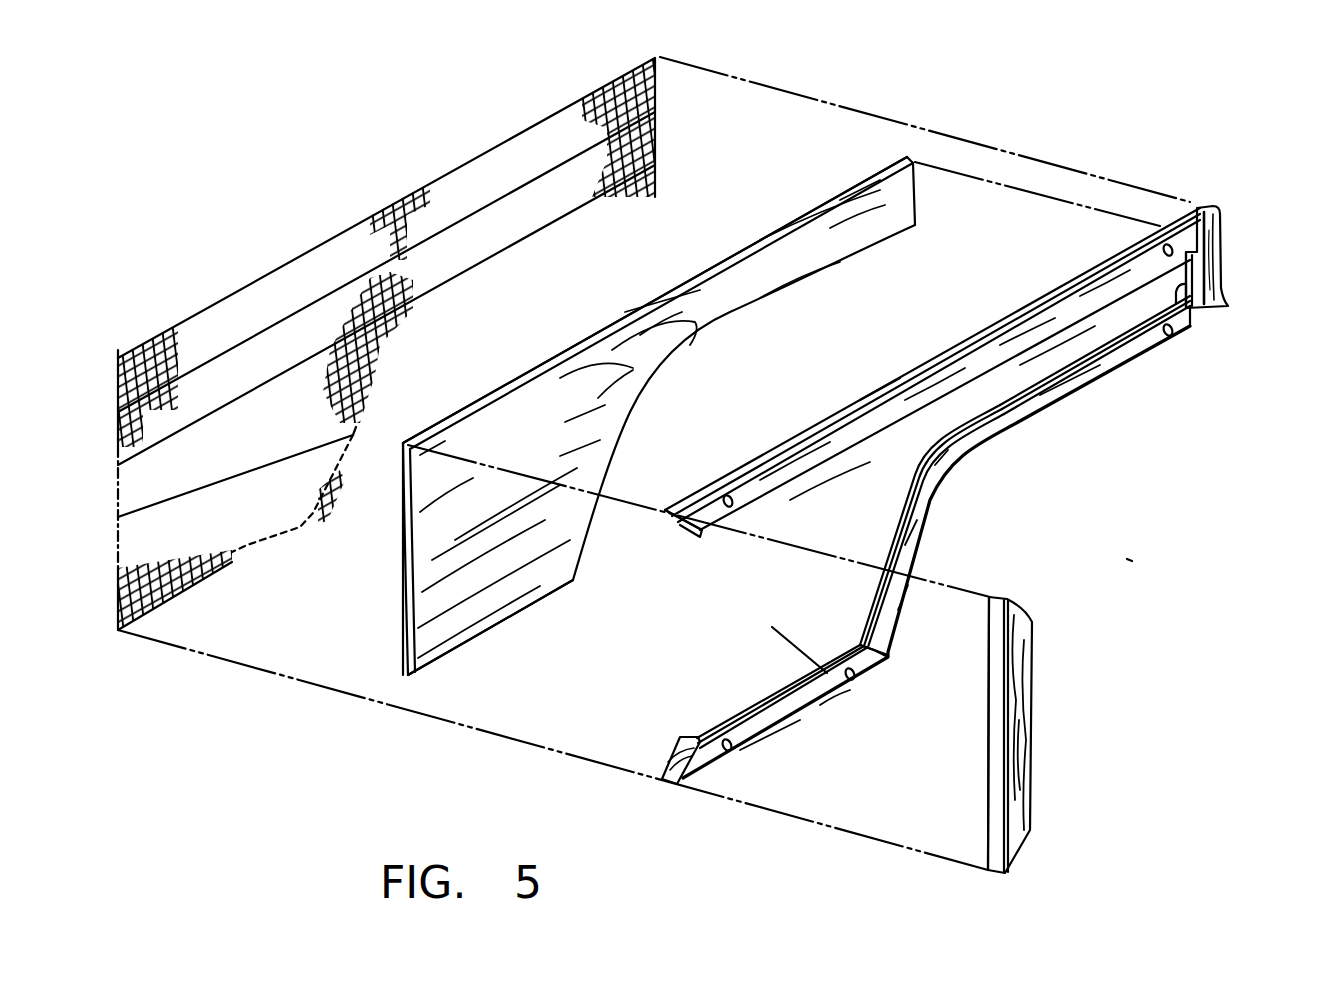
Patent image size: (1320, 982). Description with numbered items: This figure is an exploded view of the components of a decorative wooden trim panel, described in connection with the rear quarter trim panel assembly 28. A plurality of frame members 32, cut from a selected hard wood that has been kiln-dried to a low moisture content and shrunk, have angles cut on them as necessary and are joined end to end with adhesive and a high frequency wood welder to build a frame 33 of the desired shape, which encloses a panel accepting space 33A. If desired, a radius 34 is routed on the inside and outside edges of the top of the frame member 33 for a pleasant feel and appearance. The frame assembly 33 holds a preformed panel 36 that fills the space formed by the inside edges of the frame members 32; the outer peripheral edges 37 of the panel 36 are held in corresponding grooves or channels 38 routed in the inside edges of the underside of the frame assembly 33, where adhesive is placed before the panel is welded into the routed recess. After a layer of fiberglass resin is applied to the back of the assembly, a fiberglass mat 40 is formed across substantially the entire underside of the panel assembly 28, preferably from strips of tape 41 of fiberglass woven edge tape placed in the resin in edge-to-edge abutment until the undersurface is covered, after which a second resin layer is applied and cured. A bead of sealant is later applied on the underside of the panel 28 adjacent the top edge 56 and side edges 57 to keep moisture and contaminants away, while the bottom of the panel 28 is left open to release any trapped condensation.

The rear quarter trim panel assembly 28 is at (1135, 562).
The frame members 32 is at (974, 360).
The frame 33 is at (928, 553).
The panel accepting space 33A is at (846, 686).
The radius 34 is at (1078, 290).
The preformed panel 36 is at (596, 457).
The outer peripheral edges 37 is at (617, 325).
The grooves or channels 38 is at (1182, 292).
The fiberglass mat 40 is at (378, 208).
The strips of tape 41 is at (660, 137).
The top edge 56 is at (883, 383).
The side edges 57 is at (1218, 208).